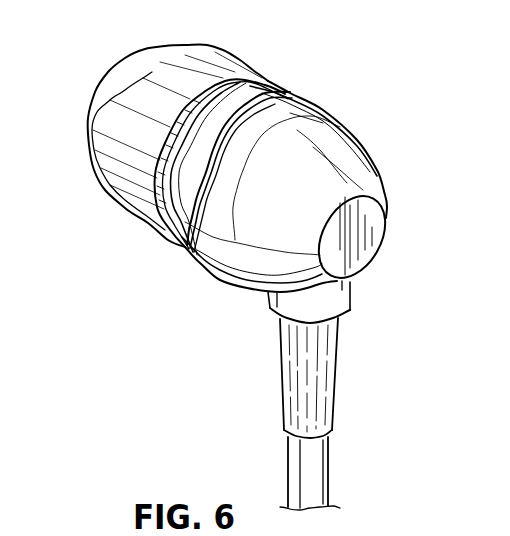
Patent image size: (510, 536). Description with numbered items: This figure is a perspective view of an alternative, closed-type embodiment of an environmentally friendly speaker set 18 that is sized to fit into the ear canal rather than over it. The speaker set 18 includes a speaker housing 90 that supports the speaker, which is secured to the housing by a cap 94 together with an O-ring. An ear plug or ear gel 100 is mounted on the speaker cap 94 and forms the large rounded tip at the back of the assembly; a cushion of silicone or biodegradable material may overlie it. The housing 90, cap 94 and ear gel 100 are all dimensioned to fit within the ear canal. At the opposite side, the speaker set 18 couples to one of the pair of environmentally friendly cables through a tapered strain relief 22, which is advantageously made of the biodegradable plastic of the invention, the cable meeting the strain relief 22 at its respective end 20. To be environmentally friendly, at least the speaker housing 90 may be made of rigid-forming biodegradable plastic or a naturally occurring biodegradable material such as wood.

The speaker set 18 is at (346, 60).
The ear plug or ear gel 100 is at (88, 127).
The cap 94 is at (166, 196).
The speaker housing 90 is at (385, 193).
The strain relief 22 is at (281, 371).
The end of cable 20 is at (289, 461).